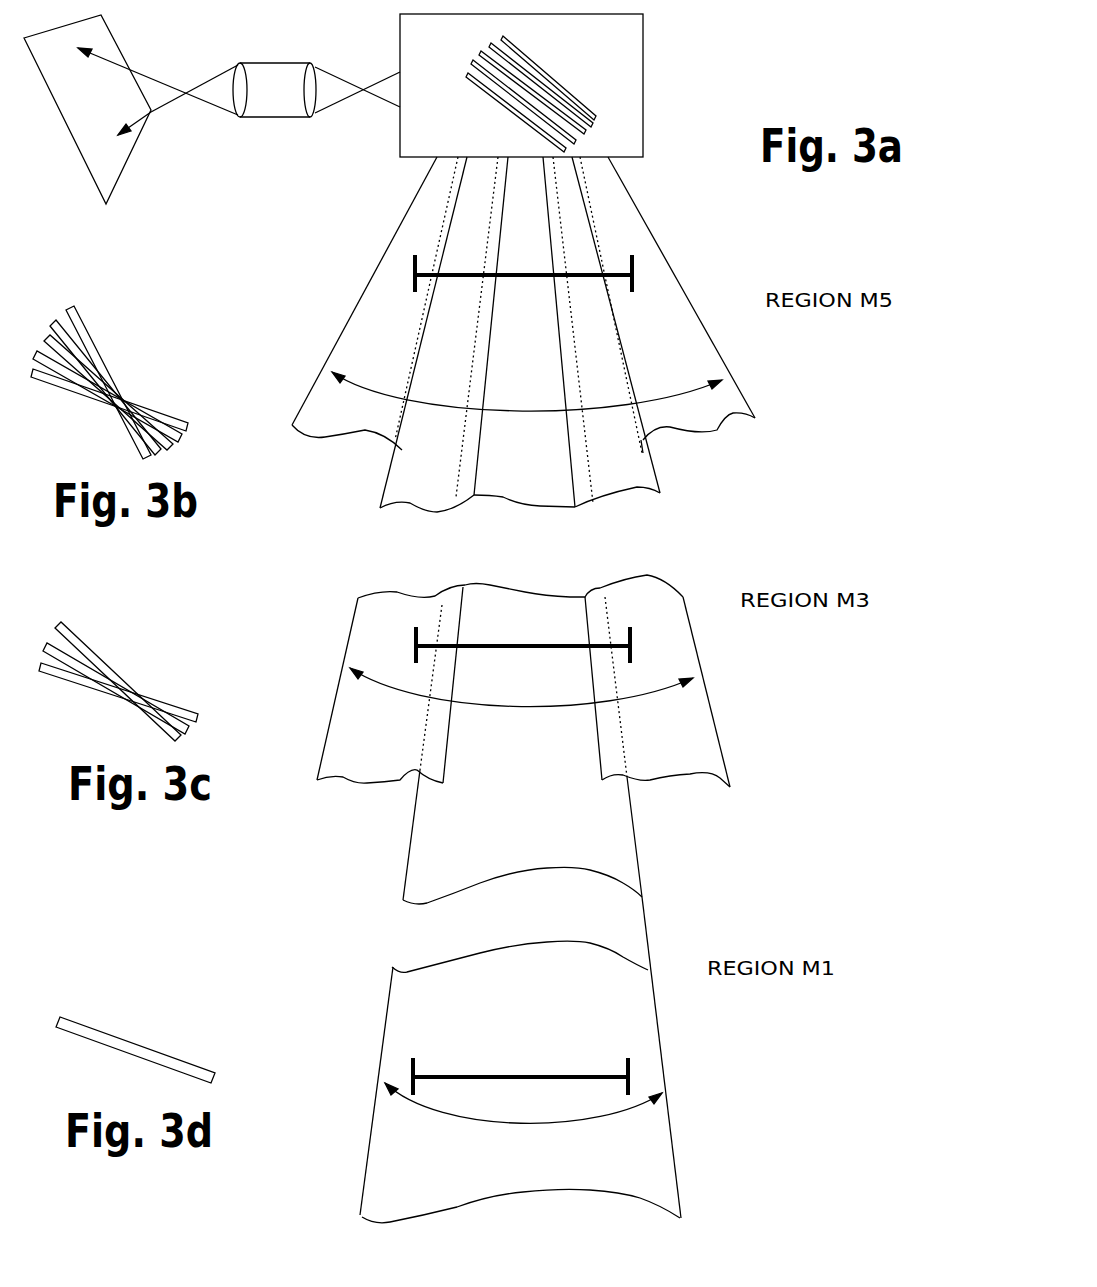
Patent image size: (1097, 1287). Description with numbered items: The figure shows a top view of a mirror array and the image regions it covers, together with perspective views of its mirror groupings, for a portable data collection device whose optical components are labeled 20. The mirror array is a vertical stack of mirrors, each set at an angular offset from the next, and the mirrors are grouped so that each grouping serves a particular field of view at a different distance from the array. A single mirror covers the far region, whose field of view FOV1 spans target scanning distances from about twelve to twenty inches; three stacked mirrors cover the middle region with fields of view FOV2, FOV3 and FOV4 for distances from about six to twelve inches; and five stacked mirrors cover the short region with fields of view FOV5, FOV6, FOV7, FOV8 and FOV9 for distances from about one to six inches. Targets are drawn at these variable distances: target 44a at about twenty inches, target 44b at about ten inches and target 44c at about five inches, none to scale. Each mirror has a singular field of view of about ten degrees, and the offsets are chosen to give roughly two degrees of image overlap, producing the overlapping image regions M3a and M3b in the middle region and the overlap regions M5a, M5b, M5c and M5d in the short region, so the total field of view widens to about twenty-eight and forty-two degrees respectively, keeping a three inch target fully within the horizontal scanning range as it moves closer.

The scanning optics (mirror, lens, mirror array) 20 is at (270, 63).
The target 44a is at (633, 1078).
The target 44b is at (633, 648).
The target 44c is at (633, 278).
The field of view FOV1 is at (430, 1038).
The field of view FOV2 is at (397, 765).
The field of view FOV3 is at (458, 813).
The field of view FOV4 is at (655, 767).
The field of view FOV5 is at (362, 418).
The field of view FOV6 is at (412, 475).
The field of view FOV7 is at (535, 483).
The field of view FOV8 is at (613, 475).
The field of view FOV9 is at (693, 417).
The overlapping image region M3a is at (444, 603).
The overlapping image region M3b is at (590, 607).
The overlap region M5a is at (410, 350).
The overlap region M5b is at (470, 342).
The overlap region M5c is at (550, 256).
The overlap region M5d is at (580, 219).